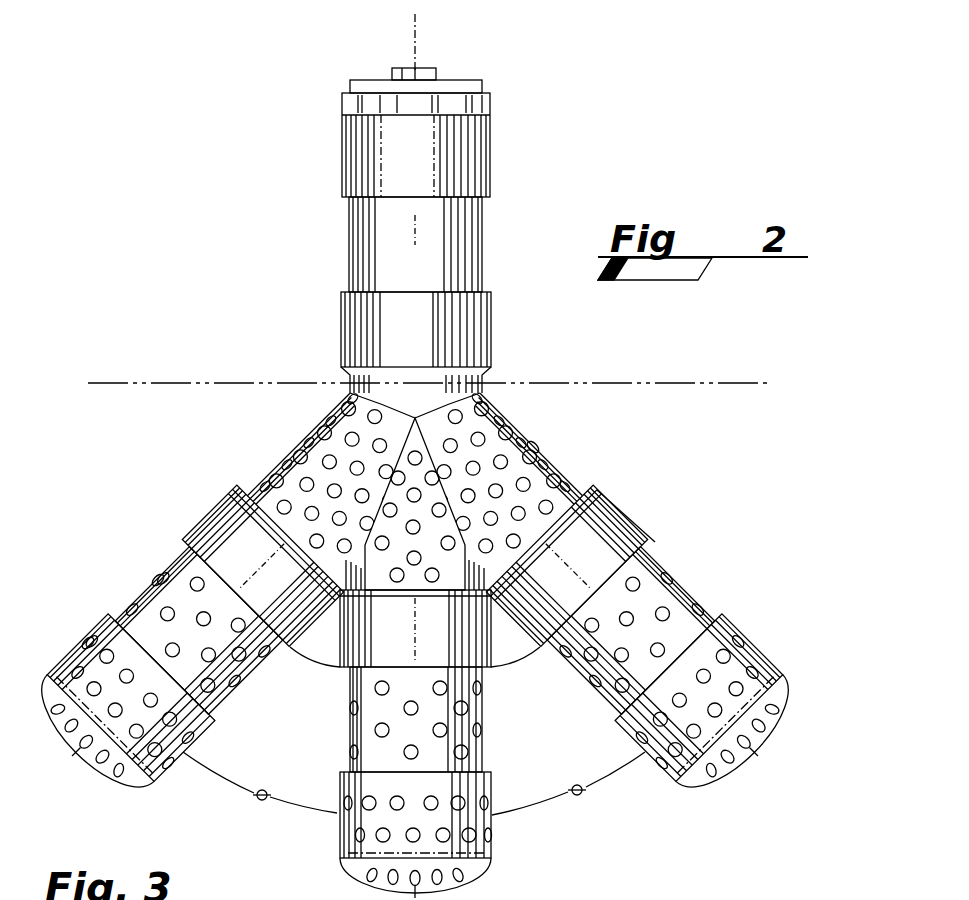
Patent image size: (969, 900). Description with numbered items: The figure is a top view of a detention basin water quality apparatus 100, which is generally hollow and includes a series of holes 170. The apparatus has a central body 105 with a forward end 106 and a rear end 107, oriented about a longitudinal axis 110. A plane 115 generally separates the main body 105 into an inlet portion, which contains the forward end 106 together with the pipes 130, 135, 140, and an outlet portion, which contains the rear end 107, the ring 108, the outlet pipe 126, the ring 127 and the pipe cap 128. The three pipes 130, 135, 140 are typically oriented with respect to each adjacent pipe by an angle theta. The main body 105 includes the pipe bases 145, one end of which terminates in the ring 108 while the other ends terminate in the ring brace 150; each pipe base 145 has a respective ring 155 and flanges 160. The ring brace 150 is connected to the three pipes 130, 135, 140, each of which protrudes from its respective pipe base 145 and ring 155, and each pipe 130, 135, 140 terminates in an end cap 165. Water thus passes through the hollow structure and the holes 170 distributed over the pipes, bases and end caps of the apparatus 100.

The detention basin water quality apparatus 100 is at (168, 226).
The central body 105 is at (310, 425).
The forward end 106 is at (148, 519).
The rear end 107 is at (322, 328).
The ring 108 is at (431, 342).
The longitudinal axis 110 is at (414, 44).
The plane 115 is at (225, 383).
The outlet pipe 126 is at (431, 264).
The ring 127 is at (431, 166).
The pipe cap 128 is at (440, 72).
The pipe 130 is at (140, 613).
The pipe 135 is at (382, 724).
The pipe 140 is at (677, 570).
The pipe base 145 is at (398, 447).
The ring brace 150 is at (623, 507).
The ring 155 is at (272, 560).
The flanges 160 is at (515, 650).
The end cap 165 is at (740, 642).
The holes 170 is at (533, 443).